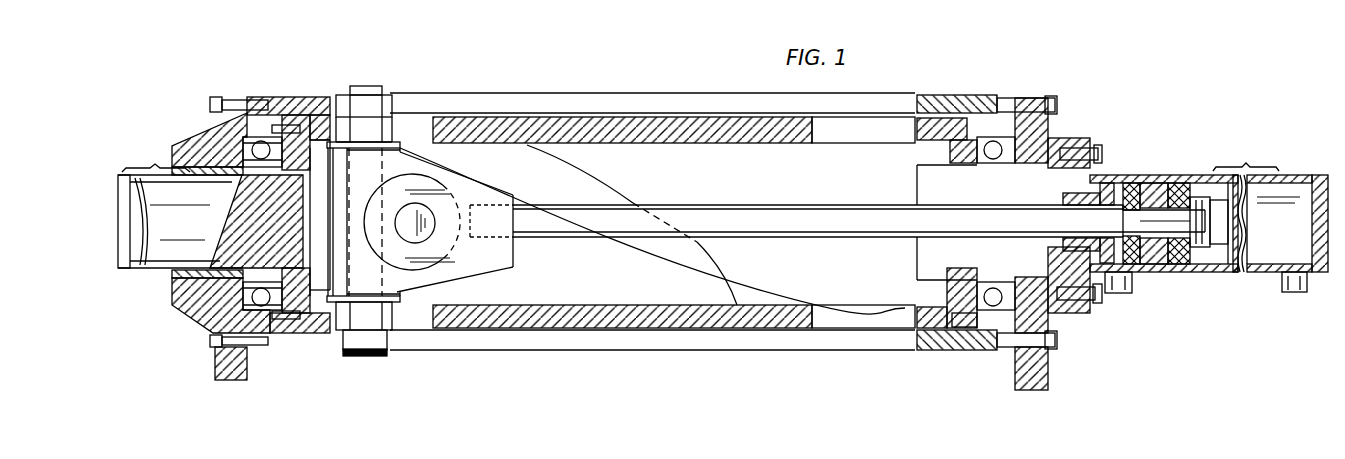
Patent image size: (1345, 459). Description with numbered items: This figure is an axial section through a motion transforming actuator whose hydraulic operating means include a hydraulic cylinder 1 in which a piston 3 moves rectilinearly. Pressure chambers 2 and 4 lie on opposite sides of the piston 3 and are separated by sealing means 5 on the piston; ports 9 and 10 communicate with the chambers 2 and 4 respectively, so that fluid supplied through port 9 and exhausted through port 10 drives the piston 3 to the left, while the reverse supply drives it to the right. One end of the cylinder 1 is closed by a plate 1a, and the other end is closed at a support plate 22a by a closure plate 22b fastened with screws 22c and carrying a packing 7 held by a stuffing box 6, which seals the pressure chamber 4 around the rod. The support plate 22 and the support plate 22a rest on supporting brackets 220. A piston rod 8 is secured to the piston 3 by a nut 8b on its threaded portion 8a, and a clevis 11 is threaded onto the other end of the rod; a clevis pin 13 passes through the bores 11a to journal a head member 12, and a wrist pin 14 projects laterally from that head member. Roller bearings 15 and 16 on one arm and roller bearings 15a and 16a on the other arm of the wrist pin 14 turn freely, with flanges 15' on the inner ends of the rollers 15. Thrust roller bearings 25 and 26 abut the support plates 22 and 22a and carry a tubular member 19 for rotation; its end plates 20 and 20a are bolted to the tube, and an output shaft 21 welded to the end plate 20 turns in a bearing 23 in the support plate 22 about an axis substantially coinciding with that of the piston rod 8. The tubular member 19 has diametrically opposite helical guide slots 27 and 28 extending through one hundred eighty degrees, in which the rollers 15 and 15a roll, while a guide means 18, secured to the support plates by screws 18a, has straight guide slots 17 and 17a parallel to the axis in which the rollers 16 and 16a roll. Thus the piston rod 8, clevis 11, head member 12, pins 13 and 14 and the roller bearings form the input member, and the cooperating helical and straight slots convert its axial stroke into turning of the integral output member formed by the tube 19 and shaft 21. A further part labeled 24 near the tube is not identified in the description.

The hydraulic cylinder 1 is at (1283, 176).
The plate 1a is at (1330, 180).
The pressure chamber 2 is at (1230, 268).
The piston 3 is at (1160, 272).
The pressure chamber 4 is at (1131, 182).
The sealing means 5 is at (1150, 182).
The stuffing box 6 is at (1062, 198).
The packing 7 is at (1104, 182).
The piston rod 8 is at (876, 210).
The threaded portion 8a is at (1208, 230).
The nut 8b is at (1192, 182).
The port 9 is at (1292, 293).
The port 10 is at (1132, 290).
The clevis 11 is at (513, 267).
The bores 11a is at (425, 222).
The head member 12 is at (403, 290).
The clevis pin 13 is at (420, 231).
The wrist pin 14 is at (380, 92).
The roller bearing 15 is at (376, 181).
The flanges 15' is at (417, 180).
The roller bearing 15a is at (396, 320).
The roller bearing 16 is at (385, 118).
The roller bearing 16a is at (397, 353).
The straight guide slot 17 is at (648, 108).
The straight guide slot 17a is at (663, 345).
The guide means 18 is at (940, 97).
The screws 18a is at (213, 100).
The tubular member 19 is at (742, 315).
The end plate 20 is at (290, 114).
The end plate 20a is at (950, 160).
The output shaft 21 is at (137, 272).
The support plate 22 is at (206, 318).
The support plate 22a is at (1049, 130).
The closure plate 22b is at (1080, 140).
The screws 22c is at (1100, 301).
The supporting brackets 220 is at (215, 372).
The bearing 23 is at (180, 280).
The bearing block 24 is at (938, 306).
The thrust roller bearing 25 is at (979, 324).
The thrust roller bearing 26 is at (262, 320).
The guide slot 27 is at (662, 266).
The guide slot 28 is at (872, 141).